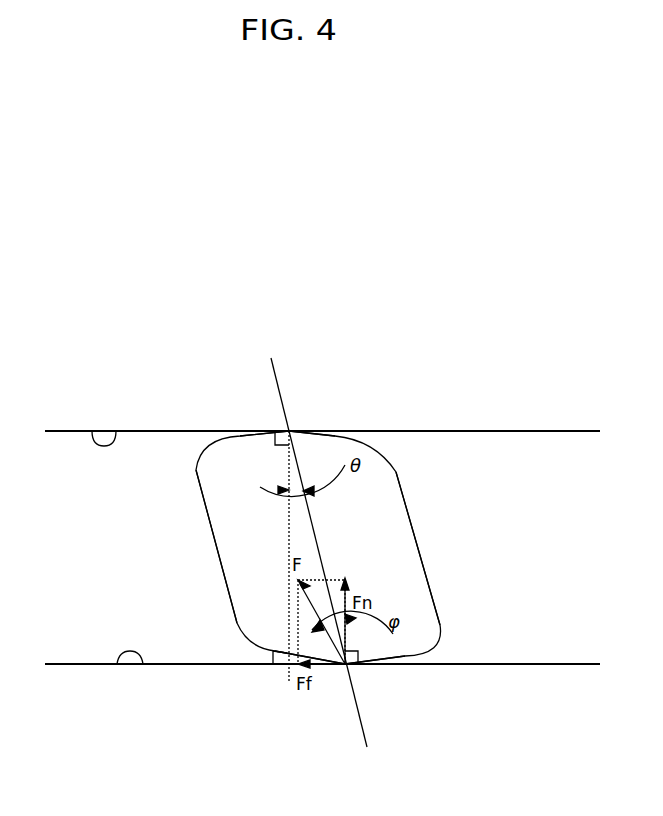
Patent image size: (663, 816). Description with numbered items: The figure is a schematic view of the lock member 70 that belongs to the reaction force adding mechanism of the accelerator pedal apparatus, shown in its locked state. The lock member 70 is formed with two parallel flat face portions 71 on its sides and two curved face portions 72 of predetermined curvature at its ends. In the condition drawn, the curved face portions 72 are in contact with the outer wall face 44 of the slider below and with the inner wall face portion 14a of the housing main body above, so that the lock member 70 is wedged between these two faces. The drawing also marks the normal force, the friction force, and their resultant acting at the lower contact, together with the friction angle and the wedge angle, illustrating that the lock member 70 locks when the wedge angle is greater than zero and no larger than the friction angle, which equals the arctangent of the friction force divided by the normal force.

The inner wall face portion 14a is at (92, 431).
The outer wall face 44 is at (117, 664).
The lock member 70 is at (412, 512).
The flat face portions 71 is at (203, 516).
The curved face portions 72 is at (362, 432).